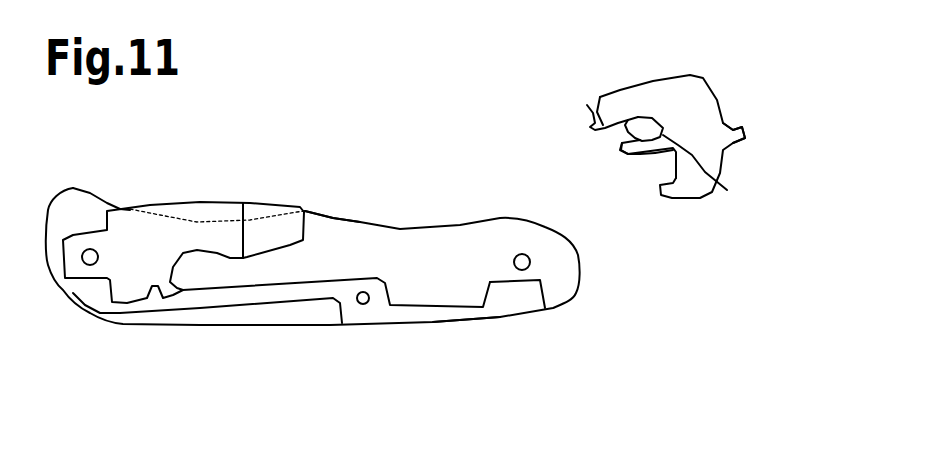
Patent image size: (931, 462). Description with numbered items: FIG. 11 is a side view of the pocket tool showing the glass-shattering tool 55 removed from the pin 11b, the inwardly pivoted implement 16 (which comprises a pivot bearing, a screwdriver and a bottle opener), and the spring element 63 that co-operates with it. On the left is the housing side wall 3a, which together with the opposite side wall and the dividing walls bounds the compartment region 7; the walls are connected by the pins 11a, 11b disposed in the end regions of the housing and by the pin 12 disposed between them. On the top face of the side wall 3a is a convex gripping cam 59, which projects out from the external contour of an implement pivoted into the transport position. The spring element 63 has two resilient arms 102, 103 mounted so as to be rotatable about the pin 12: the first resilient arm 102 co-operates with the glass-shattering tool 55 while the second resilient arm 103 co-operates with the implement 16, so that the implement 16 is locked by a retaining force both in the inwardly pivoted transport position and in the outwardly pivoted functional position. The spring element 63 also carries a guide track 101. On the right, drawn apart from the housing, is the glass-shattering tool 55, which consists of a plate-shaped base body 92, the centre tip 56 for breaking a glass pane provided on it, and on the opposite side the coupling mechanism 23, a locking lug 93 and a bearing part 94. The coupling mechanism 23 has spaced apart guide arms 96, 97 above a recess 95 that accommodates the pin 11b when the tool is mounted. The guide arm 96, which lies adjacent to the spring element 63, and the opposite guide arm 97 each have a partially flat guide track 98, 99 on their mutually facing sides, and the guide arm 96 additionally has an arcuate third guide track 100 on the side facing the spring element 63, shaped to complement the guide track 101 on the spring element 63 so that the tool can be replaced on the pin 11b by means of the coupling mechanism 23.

The side wall 3a is at (57, 293).
The compartment region 7 is at (410, 242).
The pin 11a is at (89, 249).
The pin 11b is at (519, 254).
The pin 12 is at (360, 304).
The implement 16 is at (212, 190).
The coupling mechanism 23 is at (598, 173).
The glass-shattering tool 55 is at (707, 113).
The centre tip 56 is at (745, 133).
The gripping cam 59 is at (313, 213).
The spring element 63 is at (457, 322).
The base body 92 is at (703, 77).
The locking lug 93 is at (676, 165).
The bearing part 94 is at (727, 190).
The recess 95 is at (643, 128).
The guide arm 96 is at (645, 155).
The guide arm 97 is at (587, 105).
The guide track 98 is at (628, 155).
The guide track 99 is at (625, 140).
The third guide track 100 is at (655, 160).
The guide track 101 is at (517, 285).
The first resilient arm 102 is at (412, 318).
The second resilient arm 103 is at (203, 302).